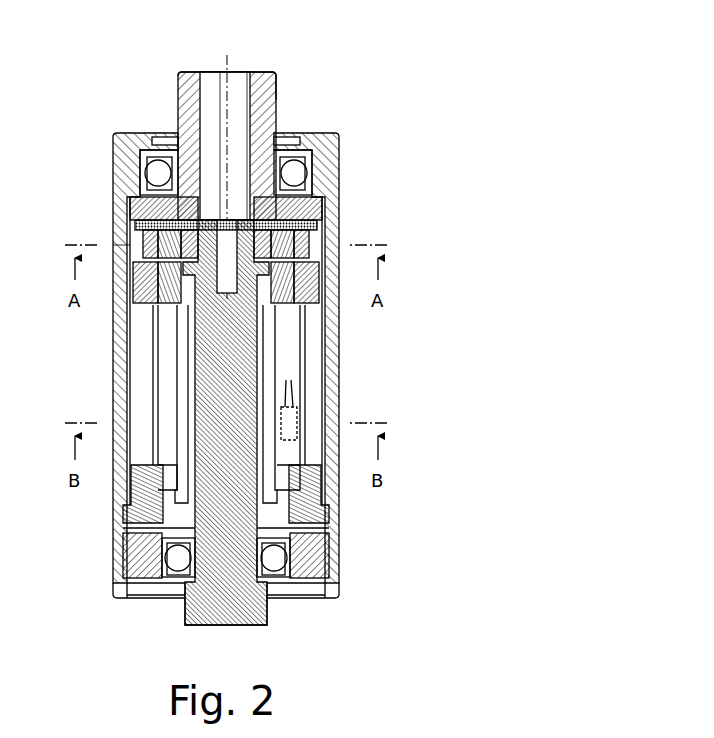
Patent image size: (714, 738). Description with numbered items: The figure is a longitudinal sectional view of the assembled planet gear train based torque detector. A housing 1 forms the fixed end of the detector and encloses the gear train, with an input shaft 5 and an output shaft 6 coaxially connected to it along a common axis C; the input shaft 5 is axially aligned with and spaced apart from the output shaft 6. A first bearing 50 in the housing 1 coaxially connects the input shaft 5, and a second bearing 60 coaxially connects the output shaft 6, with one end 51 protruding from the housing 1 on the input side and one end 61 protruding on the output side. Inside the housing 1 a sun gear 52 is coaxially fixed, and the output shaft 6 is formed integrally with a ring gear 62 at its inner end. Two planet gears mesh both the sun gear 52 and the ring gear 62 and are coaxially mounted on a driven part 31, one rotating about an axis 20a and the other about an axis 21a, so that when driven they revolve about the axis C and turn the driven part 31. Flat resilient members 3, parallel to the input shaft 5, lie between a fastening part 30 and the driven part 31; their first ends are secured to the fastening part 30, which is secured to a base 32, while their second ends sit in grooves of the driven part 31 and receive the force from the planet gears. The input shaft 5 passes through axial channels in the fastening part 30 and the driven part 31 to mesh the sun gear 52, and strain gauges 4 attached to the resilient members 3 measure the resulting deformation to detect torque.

The housing 1 is at (114, 390).
The resilient member 3 is at (288, 351).
The strain gauge 4 is at (288, 424).
The input shaft 5 is at (234, 352).
The output shaft 6 is at (184, 118).
The axis 20a is at (170, 305).
The axis 21a is at (288, 305).
The fastening part 30 is at (312, 514).
The driven part 31 is at (110, 255).
The base 32 is at (145, 558).
The first bearing 50 is at (276, 560).
The end 51 is at (250, 625).
The sun gear 52 is at (145, 200).
The second bearing 60 is at (296, 173).
The end 61 is at (259, 72).
The ring gear 62 is at (326, 248).
The axis C is at (226, 62).